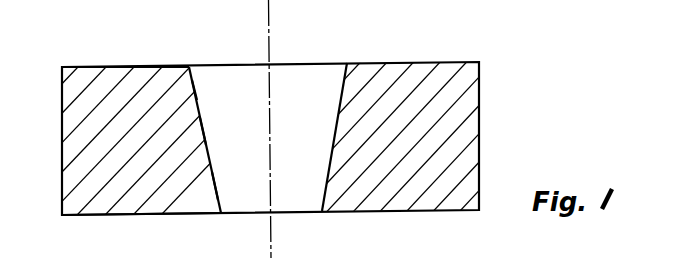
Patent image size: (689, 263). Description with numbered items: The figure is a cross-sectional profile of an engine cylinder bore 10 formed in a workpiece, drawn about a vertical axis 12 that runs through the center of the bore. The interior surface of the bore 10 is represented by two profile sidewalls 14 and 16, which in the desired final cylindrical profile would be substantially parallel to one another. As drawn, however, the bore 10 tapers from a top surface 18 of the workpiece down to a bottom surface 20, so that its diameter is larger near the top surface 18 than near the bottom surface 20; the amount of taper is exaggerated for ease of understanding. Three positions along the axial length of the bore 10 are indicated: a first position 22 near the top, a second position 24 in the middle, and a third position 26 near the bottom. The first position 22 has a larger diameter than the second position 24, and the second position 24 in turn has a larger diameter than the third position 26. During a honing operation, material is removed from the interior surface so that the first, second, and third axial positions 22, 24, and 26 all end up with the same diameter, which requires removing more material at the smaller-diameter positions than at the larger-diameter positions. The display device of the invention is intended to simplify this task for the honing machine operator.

The engine cylinder bore 10 is at (326, 50).
The vertical axis 12 is at (273, 19).
The profile sidewall 14 is at (196, 81).
The profile sidewall 16 is at (342, 80).
The top surface 18 is at (97, 66).
The bottom surface 20 is at (122, 215).
The first position 22 is at (194, 88).
The second position 24 is at (207, 139).
The third position 26 is at (215, 188).